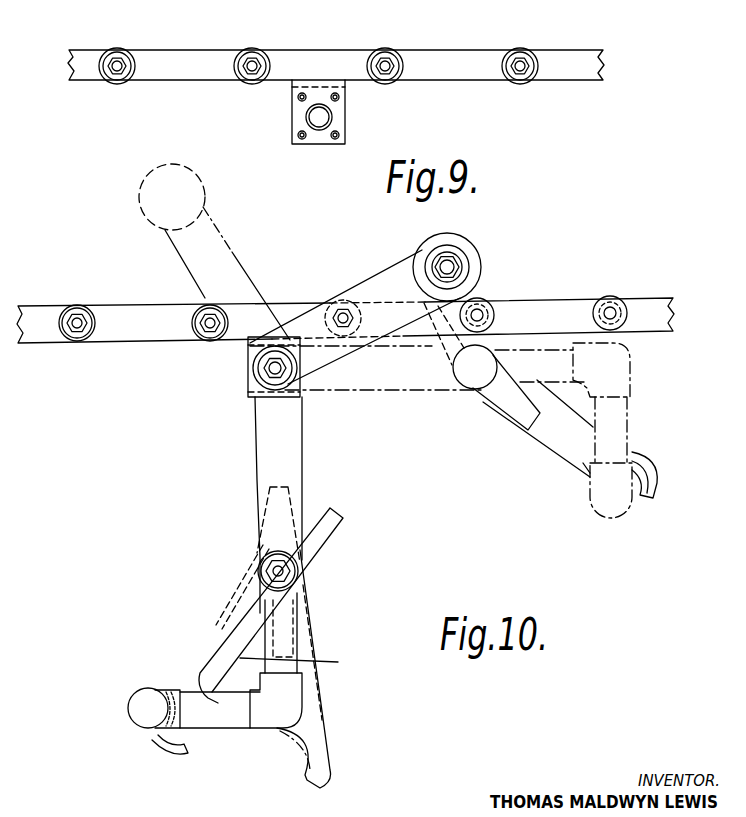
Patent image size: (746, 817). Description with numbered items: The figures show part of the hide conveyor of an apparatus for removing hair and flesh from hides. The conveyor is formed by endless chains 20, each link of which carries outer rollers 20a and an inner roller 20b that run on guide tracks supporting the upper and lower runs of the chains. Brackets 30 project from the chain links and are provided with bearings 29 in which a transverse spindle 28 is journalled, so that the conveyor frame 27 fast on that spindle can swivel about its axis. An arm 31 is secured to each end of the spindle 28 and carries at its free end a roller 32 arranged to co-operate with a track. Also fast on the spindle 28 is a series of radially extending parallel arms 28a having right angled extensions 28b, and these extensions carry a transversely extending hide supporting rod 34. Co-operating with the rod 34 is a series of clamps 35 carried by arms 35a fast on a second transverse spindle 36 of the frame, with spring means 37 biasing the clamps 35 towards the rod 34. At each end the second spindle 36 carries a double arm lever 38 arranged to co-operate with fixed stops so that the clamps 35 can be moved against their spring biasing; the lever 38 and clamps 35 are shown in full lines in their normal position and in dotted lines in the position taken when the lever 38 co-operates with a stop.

In FIG. 10, the endless chain 20 is at (556, 308).
In FIG. 9, the outer roller 20a is at (531, 69).
In FIG. 9, the inner roller 20b is at (521, 48).
In FIG. 10, the conveyor frame 27 is at (253, 492).
In FIG. 10, the transverse spindle 28 is at (285, 373).
In FIG. 10, the radially extending parallel arm 28a is at (303, 453).
In FIG. 10, the right angled extension 28b is at (233, 723).
In FIG. 9, the bearing 29 is at (305, 117).
In FIG. 10, the bearing 29 is at (256, 370).
In FIG. 9, the bracket 30 is at (340, 113).
In FIG. 10, the bracket 30 is at (283, 370).
In FIG. 10, the arm 31 is at (316, 322).
In FIG. 10, the roller 32 is at (476, 250).
In FIG. 10, the hide supporting rod 34 is at (143, 698).
In FIG. 10, the clamp 35 is at (153, 741).
In FIG. 10, the arm 35a is at (312, 685).
In FIG. 10, the second transverse spindle 36 is at (284, 570).
In FIG. 10, the spring means 37 is at (210, 653).
In FIG. 10, the double arm lever 38 is at (232, 603).